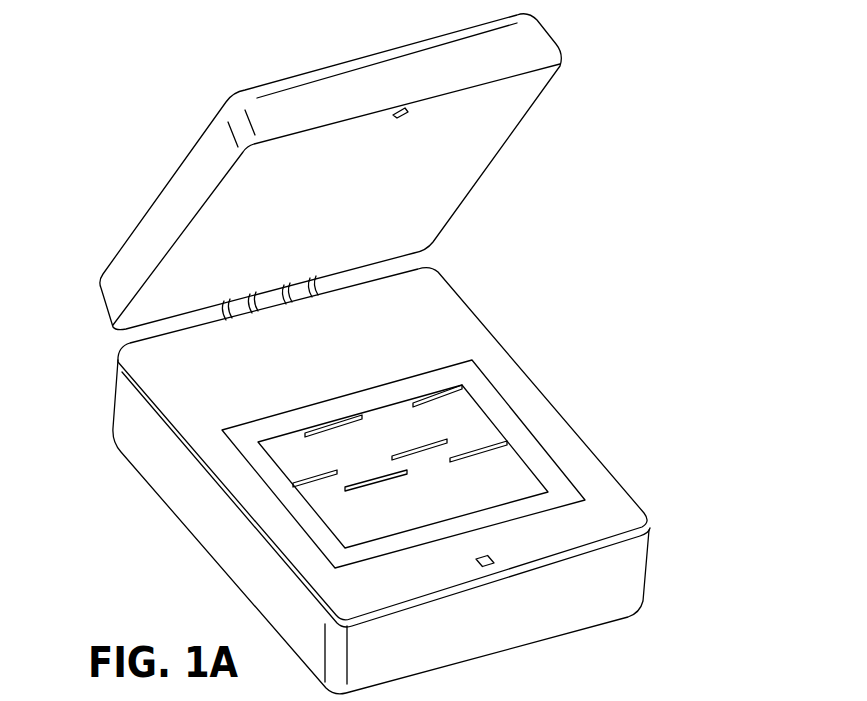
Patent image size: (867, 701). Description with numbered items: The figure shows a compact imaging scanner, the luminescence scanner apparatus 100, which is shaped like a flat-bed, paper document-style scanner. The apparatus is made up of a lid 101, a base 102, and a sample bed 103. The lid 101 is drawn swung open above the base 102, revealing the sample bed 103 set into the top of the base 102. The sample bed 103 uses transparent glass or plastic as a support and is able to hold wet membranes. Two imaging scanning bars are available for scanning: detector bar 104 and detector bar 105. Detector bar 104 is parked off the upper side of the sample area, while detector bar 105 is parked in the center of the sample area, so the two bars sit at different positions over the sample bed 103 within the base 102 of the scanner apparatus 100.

The luminescence scanner apparatus 100 is at (114, 64).
The lid 101 is at (527, 113).
The base 102 is at (648, 572).
The sample bed 103 is at (520, 450).
The detector bar 104 is at (437, 397).
The detector bar 105 is at (477, 453).